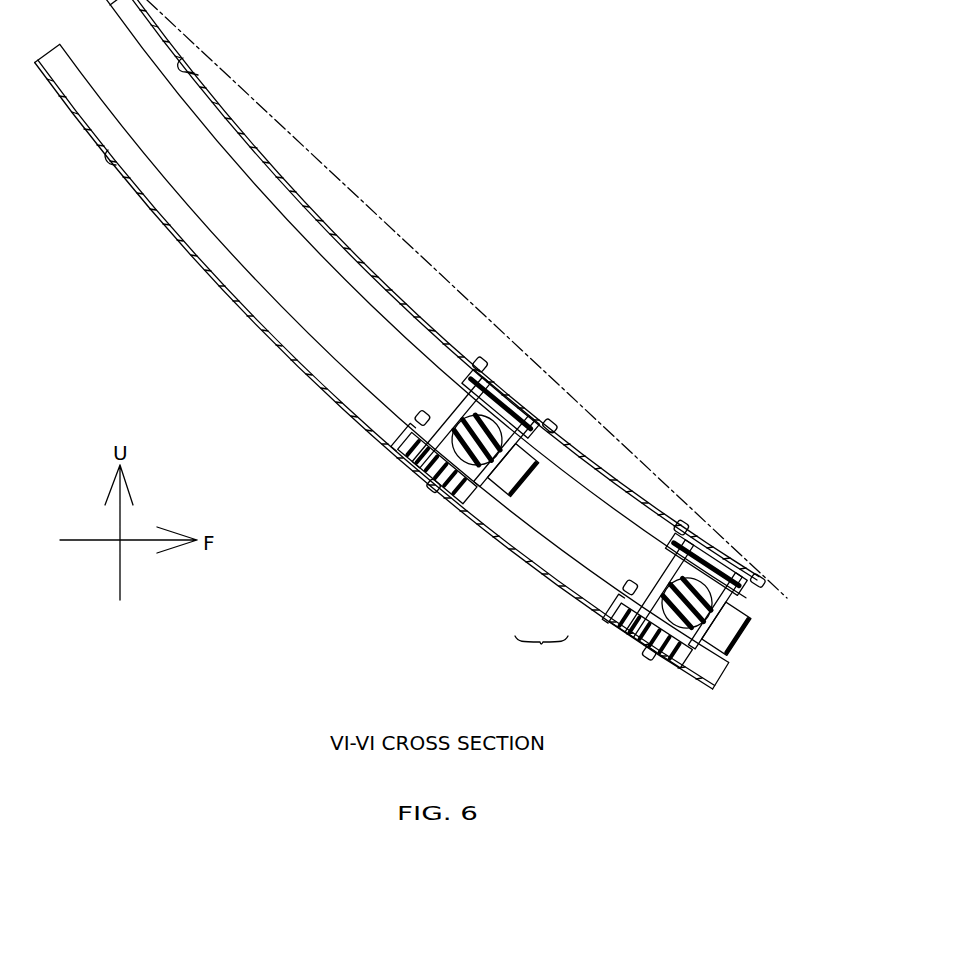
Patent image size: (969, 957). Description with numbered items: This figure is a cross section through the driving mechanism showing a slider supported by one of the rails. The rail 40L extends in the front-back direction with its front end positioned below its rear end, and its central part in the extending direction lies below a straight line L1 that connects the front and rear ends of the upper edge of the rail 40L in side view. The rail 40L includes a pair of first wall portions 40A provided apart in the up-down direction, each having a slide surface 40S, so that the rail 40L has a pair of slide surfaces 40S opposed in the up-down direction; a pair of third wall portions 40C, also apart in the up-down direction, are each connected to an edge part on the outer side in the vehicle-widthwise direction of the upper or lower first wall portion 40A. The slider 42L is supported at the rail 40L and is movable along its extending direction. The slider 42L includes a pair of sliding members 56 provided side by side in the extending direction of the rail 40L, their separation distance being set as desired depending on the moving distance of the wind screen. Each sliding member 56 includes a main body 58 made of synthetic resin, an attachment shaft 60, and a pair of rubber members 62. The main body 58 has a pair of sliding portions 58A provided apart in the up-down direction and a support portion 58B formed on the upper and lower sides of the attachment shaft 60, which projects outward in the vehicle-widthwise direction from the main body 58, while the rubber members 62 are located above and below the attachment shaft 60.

The rail 40L is at (247, 120).
The slide surface 40S is at (190, 68).
The first wall portion 40A is at (353, 245).
The third wall portion 40C is at (327, 158).
The straight line L1 is at (340, 180).
The slider 42L is at (541, 651).
The sliding member 56 is at (500, 522).
The main body 58 is at (530, 486).
The sliding portion 58A is at (510, 405).
The support portion 58B is at (463, 410).
The attachment shaft 60 is at (417, 473).
The rubber member 62 is at (525, 400).